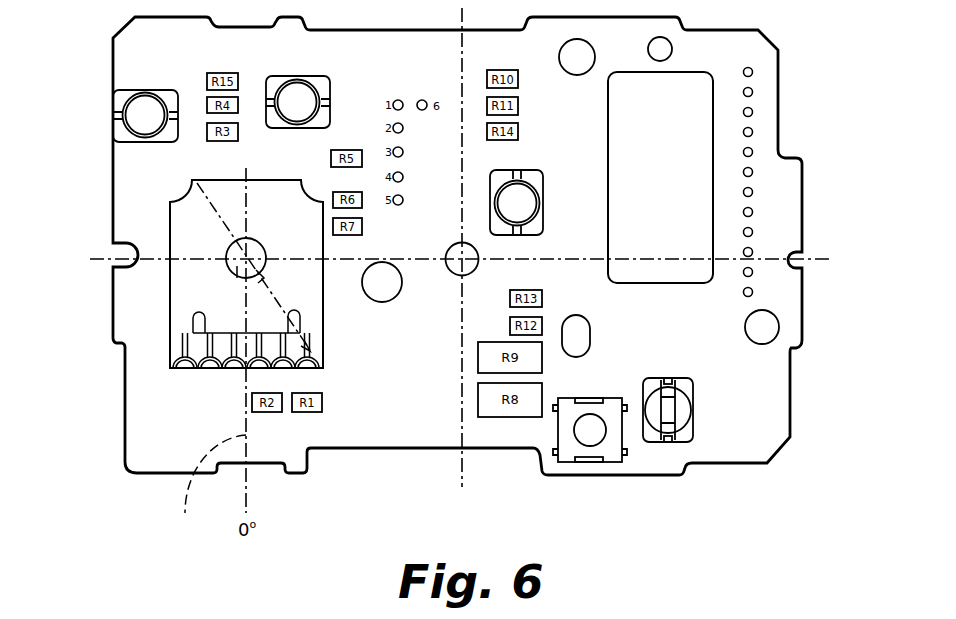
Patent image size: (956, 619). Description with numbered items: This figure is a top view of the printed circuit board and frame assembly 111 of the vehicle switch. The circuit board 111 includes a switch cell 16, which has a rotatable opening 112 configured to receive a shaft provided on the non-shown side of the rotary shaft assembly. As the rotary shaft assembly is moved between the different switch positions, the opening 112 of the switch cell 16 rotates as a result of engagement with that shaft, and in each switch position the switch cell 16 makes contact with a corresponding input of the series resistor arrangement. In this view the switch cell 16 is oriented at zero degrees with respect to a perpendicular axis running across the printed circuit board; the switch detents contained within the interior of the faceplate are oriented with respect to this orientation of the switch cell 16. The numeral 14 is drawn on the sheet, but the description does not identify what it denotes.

The printed circuit board and frame assembly 111 is at (802, 308).
The switch cell 16 is at (180, 218).
The rotatable opening 112 is at (240, 272).
The rotation angle range 14 is at (208, 487).